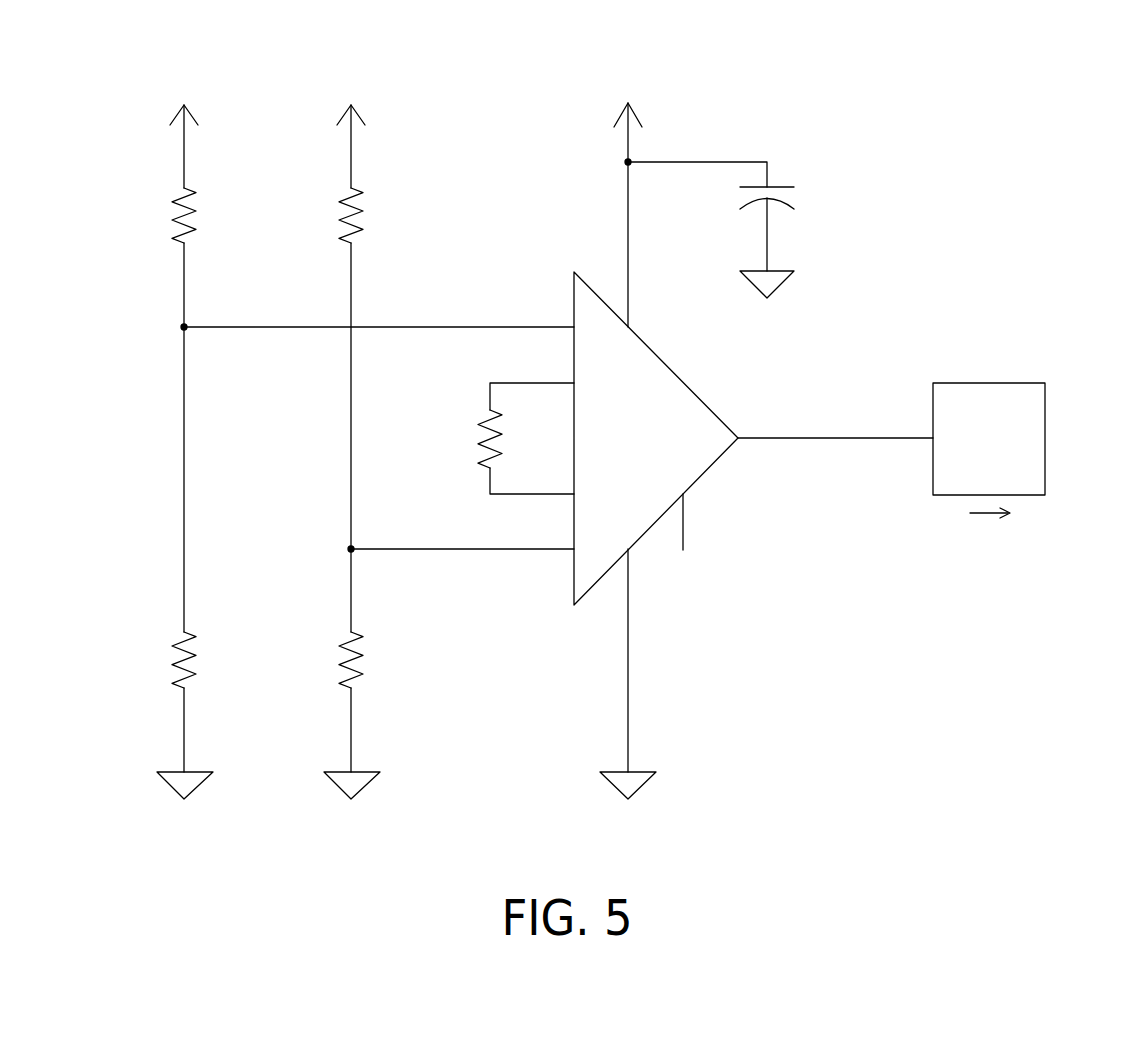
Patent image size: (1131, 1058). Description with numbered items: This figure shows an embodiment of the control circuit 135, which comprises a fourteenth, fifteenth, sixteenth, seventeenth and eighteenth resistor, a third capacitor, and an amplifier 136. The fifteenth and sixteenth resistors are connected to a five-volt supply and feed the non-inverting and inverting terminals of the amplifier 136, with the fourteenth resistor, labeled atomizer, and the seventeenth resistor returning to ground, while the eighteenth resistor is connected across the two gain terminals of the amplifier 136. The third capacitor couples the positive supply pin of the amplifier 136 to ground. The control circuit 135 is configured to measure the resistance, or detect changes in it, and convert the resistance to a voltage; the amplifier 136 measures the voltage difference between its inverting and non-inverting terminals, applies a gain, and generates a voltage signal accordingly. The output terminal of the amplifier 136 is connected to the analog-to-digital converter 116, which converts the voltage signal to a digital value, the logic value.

The control circuit 135 is at (490, 80).
The amplifier 136 is at (702, 448).
The analog-to-digital converter (ADC) 116 is at (1045, 438).